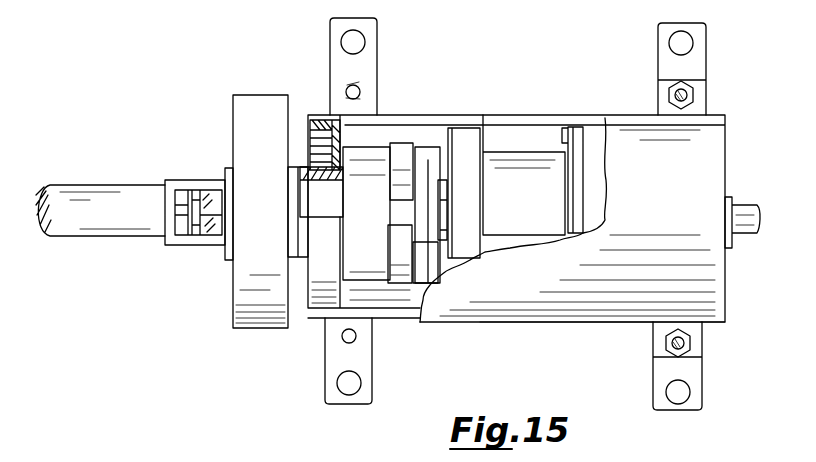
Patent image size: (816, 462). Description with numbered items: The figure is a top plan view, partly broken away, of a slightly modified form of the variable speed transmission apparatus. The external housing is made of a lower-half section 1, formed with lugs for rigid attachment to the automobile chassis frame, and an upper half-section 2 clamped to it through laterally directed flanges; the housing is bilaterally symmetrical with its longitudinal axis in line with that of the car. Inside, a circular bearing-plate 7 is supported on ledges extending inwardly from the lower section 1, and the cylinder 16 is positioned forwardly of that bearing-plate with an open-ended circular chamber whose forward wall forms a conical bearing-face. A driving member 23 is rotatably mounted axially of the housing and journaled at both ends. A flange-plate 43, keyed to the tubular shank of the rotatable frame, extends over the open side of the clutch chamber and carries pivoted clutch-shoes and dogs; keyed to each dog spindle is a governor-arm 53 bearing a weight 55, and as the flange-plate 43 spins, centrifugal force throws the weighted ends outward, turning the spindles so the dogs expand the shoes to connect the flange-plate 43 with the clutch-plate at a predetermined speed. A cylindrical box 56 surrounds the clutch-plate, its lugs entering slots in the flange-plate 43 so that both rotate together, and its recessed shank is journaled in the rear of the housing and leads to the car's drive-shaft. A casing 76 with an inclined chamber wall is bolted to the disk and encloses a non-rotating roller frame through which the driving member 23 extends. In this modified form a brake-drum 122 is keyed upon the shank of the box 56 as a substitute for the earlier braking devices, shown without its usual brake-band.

The lower-half section of the external housing 1 is at (481, 115).
The upper half-section of the housing 2 is at (611, 320).
The circular bearing-plate 7 is at (470, 195).
The cylinder 16 is at (512, 160).
The driving member 23 is at (742, 210).
The flange-plate 43 is at (402, 152).
The governor-arm 53 is at (440, 218).
The weight 55 is at (435, 267).
The cylindrical box 56 is at (368, 160).
The casing 76 is at (593, 153).
The brake-drum 122 is at (254, 106).